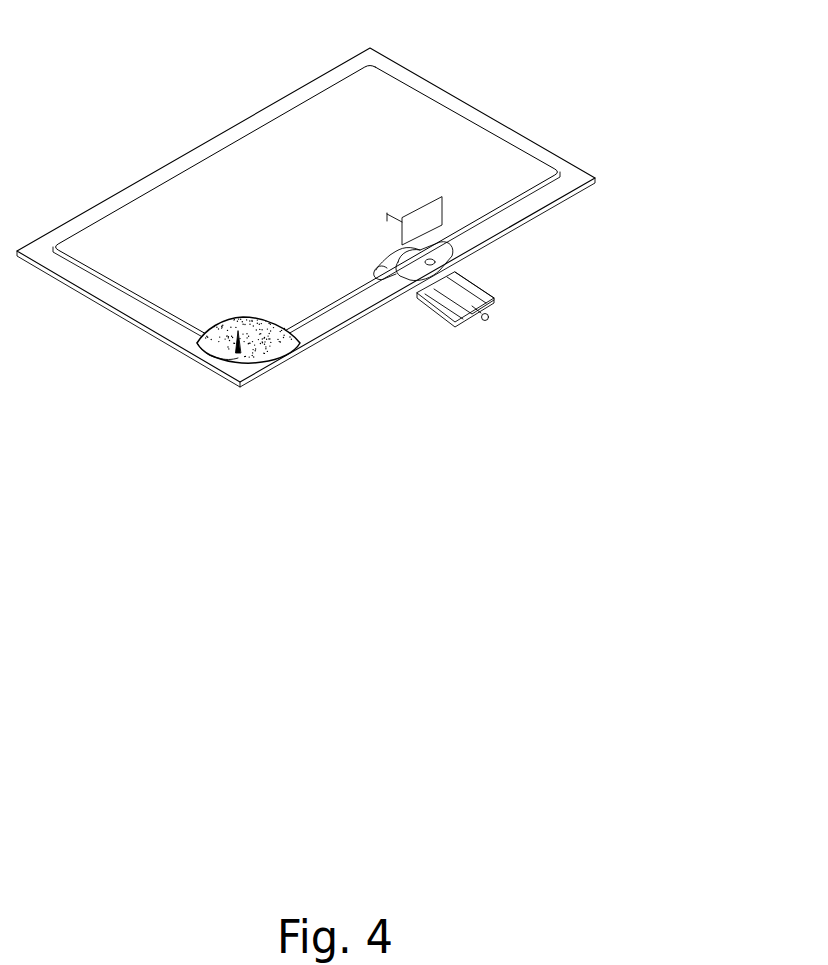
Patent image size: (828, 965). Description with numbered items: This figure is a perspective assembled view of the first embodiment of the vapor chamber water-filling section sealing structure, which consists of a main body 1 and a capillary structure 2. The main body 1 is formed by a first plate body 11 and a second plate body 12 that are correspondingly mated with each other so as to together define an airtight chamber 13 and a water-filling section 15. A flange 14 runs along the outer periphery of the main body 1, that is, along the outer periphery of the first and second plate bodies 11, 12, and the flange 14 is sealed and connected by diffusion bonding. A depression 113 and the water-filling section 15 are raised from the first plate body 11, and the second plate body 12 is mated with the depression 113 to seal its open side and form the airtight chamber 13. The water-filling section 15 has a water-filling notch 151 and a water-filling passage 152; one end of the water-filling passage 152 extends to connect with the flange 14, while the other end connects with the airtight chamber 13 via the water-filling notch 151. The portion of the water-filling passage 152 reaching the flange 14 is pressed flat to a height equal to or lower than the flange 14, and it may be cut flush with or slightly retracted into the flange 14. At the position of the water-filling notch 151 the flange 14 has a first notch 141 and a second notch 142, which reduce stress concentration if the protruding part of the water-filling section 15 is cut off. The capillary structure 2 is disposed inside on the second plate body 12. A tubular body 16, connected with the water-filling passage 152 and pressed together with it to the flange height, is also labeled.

The main body 1 is at (665, 150).
The first plate body 11 is at (585, 186).
The second plate body 12 is at (490, 244).
The depression 113 is at (203, 358).
The capillary structure 2 is at (260, 347).
The airtight chamber 13 is at (237, 353).
The flange 14 is at (213, 33).
The first notch 141 is at (452, 238).
The second notch 142 is at (387, 268).
The water-filling section 15 is at (628, 312).
The water-filling notch 151 is at (472, 285).
The water-filling passage 152 is at (458, 273).
The tubular body 16 is at (483, 318).